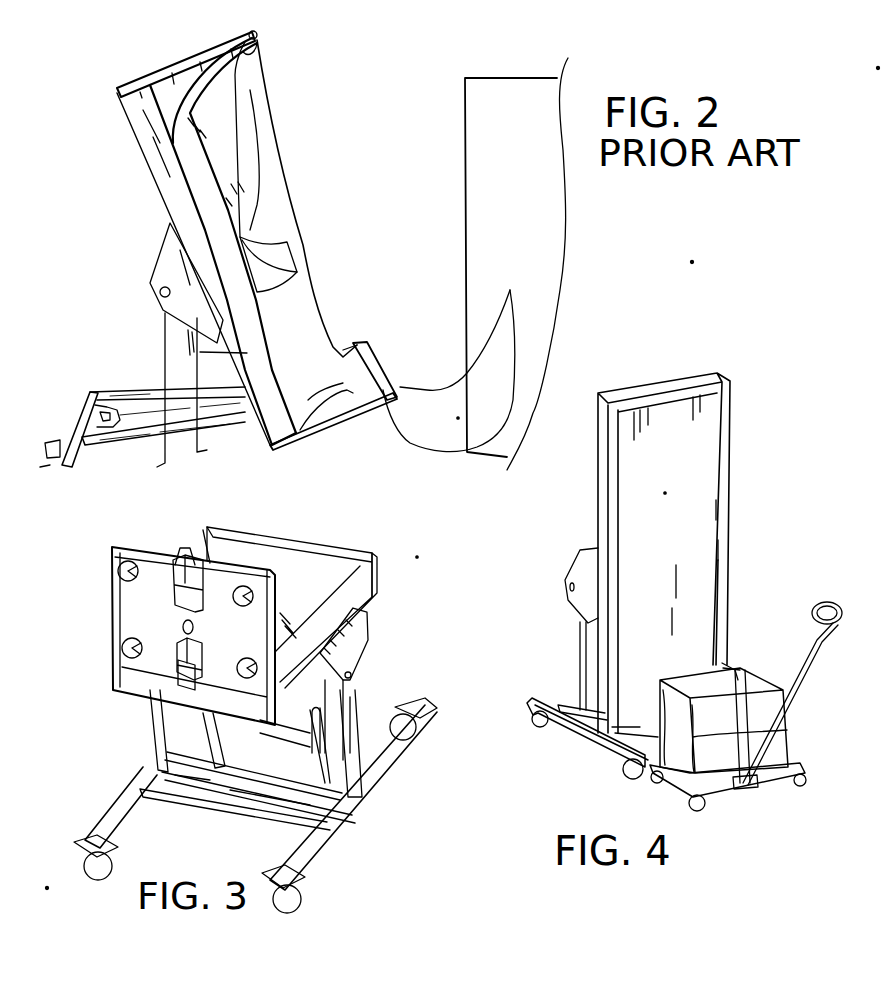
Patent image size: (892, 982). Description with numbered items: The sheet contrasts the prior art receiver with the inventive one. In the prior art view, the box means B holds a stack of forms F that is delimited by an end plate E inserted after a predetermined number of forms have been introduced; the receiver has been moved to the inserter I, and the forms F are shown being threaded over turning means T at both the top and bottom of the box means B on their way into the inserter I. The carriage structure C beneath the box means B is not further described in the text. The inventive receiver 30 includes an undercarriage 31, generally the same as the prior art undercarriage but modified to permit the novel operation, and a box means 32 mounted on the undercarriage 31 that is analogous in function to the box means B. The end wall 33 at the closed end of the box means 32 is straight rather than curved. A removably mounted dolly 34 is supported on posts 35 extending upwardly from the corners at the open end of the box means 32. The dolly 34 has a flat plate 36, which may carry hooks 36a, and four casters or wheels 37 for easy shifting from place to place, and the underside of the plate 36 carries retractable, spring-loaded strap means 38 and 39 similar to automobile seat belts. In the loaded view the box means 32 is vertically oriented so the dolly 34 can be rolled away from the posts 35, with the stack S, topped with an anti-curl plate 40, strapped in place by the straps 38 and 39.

In FIG. 2, the box means B is at (177, 193).
In FIG. 2, the turning means T is at (250, 48).
In FIG. 2, the forms F is at (303, 323).
In FIG. 2, the carriage base C is at (77, 413).
In FIG. 2, the end plate E is at (358, 390).
In FIG. 2, the inserter I is at (530, 297).
In FIG. 3, the receiver 30 is at (103, 718).
In FIG. 3, the undercarriage 31 is at (357, 753).
In FIG. 3, the box means 32 is at (369, 538).
In FIG. 4, the box means 32 is at (700, 471).
In FIG. 3, the end wall 33 is at (307, 560).
In FIG. 3, the dolly 34 is at (91, 608).
In FIG. 4, the dolly 34 is at (781, 796).
In FIG. 3, the posts 35 is at (120, 570).
In FIG. 4, the posts 35 is at (605, 743).
In FIG. 3, the flat plate 36 is at (153, 577).
In FIG. 3, the hooks 36a is at (178, 560).
In FIG. 3, the casters or wheels 37 is at (123, 647).
In FIG. 3, the retractable strap means 38 is at (178, 560).
In FIG. 4, the retractable strap means 38 is at (747, 737).
In FIG. 3, the retractable strap means 39 is at (177, 660).
In FIG. 4, the retractable strap means 39 is at (723, 663).
In FIG. 4, the anti-curl plate 40 is at (750, 660).
In FIG. 4, the stack S is at (722, 720).